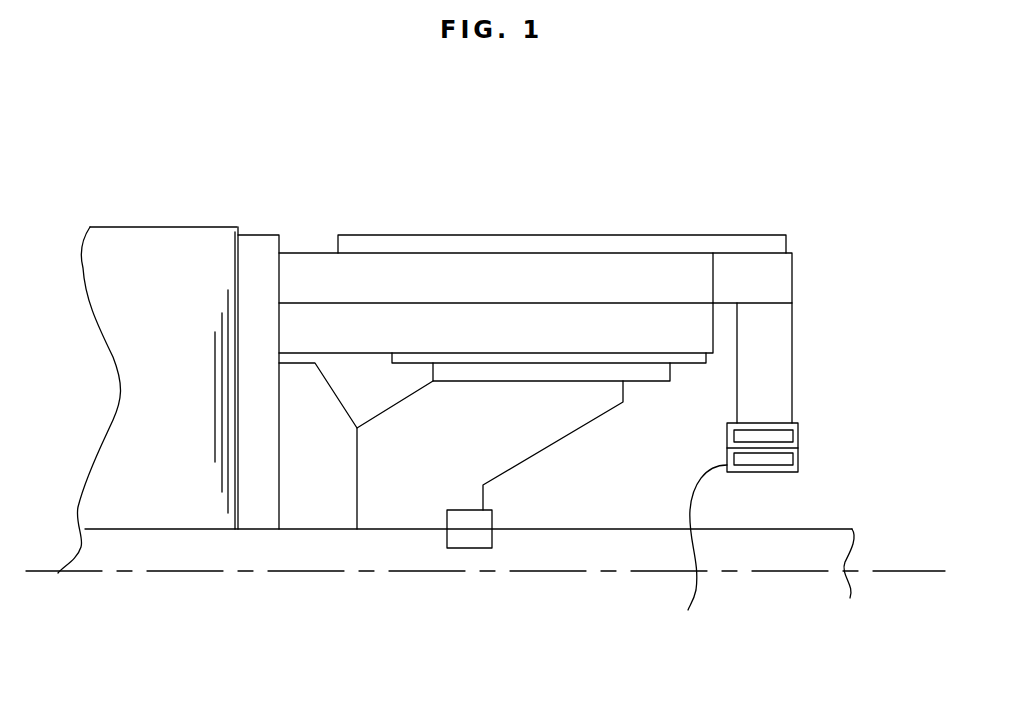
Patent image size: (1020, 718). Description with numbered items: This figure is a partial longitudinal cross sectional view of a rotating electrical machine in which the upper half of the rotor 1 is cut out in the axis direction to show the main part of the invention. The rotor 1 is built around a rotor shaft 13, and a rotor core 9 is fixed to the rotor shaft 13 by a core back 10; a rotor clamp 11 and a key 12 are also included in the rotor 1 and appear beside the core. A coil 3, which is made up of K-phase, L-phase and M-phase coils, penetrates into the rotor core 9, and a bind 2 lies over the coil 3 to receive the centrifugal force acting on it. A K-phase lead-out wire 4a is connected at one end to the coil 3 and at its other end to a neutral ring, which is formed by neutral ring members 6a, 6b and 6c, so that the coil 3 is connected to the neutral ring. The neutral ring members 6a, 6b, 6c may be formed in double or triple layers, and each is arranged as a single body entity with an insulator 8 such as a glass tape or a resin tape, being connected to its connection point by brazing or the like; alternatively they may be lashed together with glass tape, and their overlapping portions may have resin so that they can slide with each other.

The rotor 1 is at (742, 577).
The bind 2 is at (630, 242).
The coil 3 is at (333, 315).
The K-phase lead-out wire 4a is at (782, 360).
The neutral ring member 6a is at (793, 435).
The neutral ring member 6b is at (793, 458).
The neutral ring member 6c is at (795, 468).
The insulator 8 is at (701, 554).
The rotor core 9 is at (157, 512).
The core back 10 is at (253, 512).
The rotor clamp 11 is at (395, 512).
The key 12 is at (465, 535).
The rotor shaft 13 is at (787, 552).